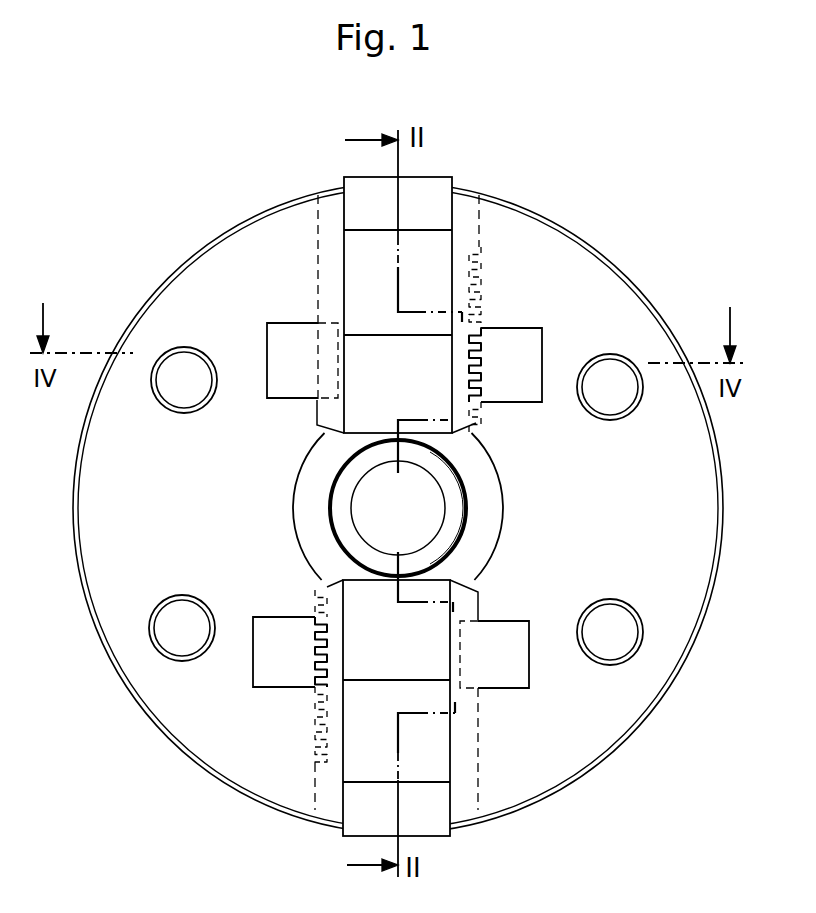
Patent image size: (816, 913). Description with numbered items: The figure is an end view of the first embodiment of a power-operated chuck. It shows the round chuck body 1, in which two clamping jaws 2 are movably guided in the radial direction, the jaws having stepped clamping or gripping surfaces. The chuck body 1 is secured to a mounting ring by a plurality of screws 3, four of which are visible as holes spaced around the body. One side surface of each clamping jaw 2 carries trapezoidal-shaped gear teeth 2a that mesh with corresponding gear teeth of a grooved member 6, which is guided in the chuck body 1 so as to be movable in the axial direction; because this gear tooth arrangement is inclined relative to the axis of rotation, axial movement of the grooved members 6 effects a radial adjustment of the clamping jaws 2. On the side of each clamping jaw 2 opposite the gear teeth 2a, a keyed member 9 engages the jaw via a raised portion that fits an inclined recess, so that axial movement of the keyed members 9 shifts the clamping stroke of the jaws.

The chuck body 1 is at (583, 287).
The clamping jaw 2 is at (431, 218).
The trapezoidal-shaped gear teeth 2a is at (478, 317).
The screw 3 is at (195, 363).
The grooved member 6 is at (522, 380).
The keyed member 9 is at (287, 352).